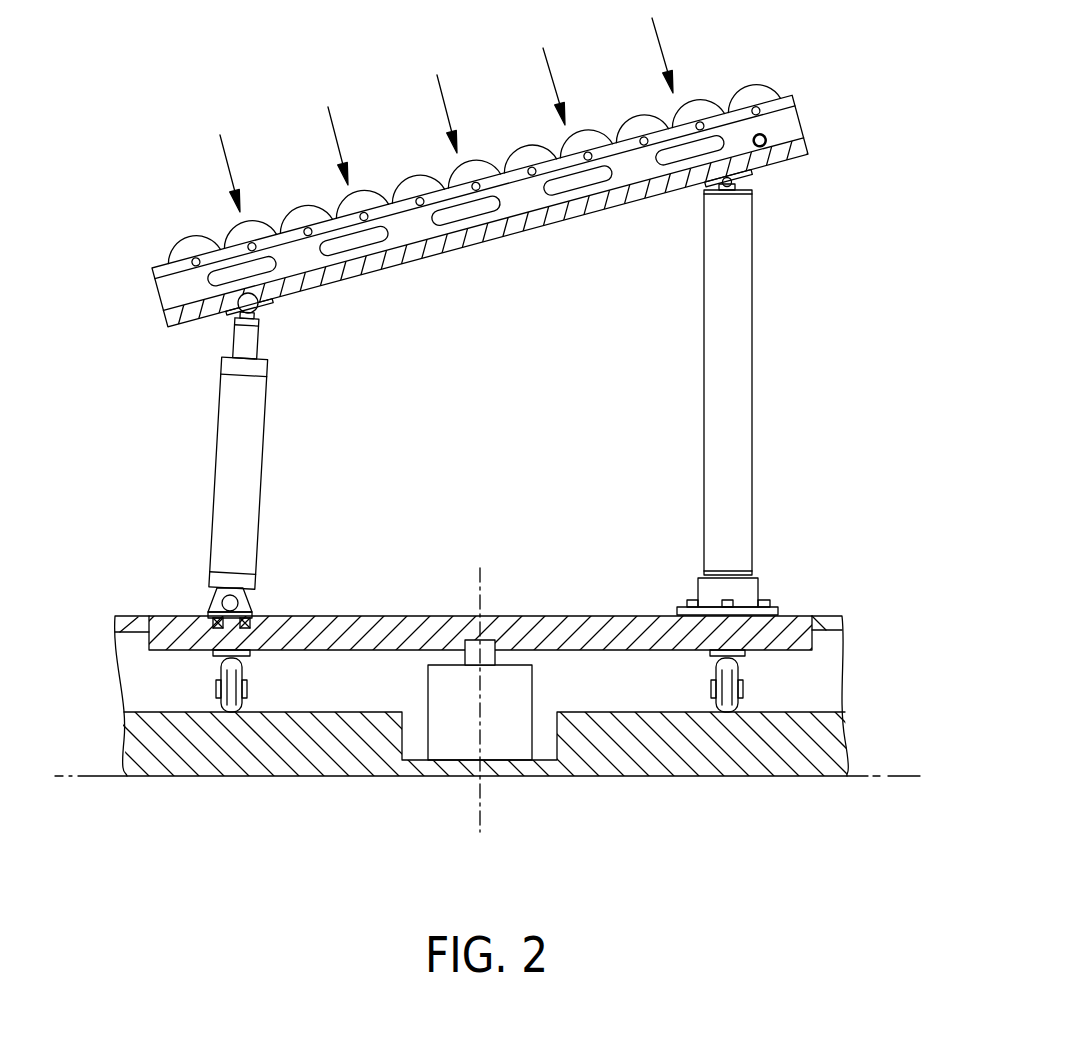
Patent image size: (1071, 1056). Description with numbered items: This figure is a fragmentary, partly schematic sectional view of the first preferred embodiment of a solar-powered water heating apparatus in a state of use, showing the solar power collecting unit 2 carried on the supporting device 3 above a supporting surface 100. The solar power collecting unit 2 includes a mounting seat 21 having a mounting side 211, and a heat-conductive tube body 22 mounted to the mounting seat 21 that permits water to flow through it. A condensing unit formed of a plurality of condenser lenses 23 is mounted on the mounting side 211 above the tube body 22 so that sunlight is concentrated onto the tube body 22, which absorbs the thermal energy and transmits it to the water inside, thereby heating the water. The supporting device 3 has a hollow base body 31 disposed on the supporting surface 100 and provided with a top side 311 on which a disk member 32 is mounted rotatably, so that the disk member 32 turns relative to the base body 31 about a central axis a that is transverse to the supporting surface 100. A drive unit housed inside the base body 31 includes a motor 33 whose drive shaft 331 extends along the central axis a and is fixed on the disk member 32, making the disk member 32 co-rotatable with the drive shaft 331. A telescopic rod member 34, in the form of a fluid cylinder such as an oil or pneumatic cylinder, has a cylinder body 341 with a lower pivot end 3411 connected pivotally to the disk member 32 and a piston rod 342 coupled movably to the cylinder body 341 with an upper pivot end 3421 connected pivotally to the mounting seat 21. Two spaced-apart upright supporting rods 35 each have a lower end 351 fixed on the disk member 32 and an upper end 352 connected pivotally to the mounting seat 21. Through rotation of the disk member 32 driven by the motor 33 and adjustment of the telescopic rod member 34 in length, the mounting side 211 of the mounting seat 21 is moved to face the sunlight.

The solar power collecting unit 2 is at (510, 173).
The mounting seat 21 is at (479, 211).
The mounting side 211 is at (473, 188).
The heat-conductive tube body 22 is at (759, 140).
The condenser lenses 23 is at (471, 171).
The supporting device 3 is at (783, 383).
The hollow base body 31 is at (653, 777).
The top side 311 is at (823, 615).
The disk member 32 is at (563, 615).
The motor 33 is at (450, 748).
The drive shaft 331 is at (497, 655).
The telescopic rod member 34 is at (192, 444).
The cylinder body 341 is at (263, 442).
The lower pivot end 3411 is at (255, 586).
The piston rod 342 is at (234, 340).
The upper pivot end 3421 is at (263, 312).
The upright supporting rods 35 is at (703, 403).
The lower end 351 is at (700, 592).
The upper end 352 is at (742, 183).
The supporting surface 100 is at (865, 780).
The central axis a is at (479, 686).